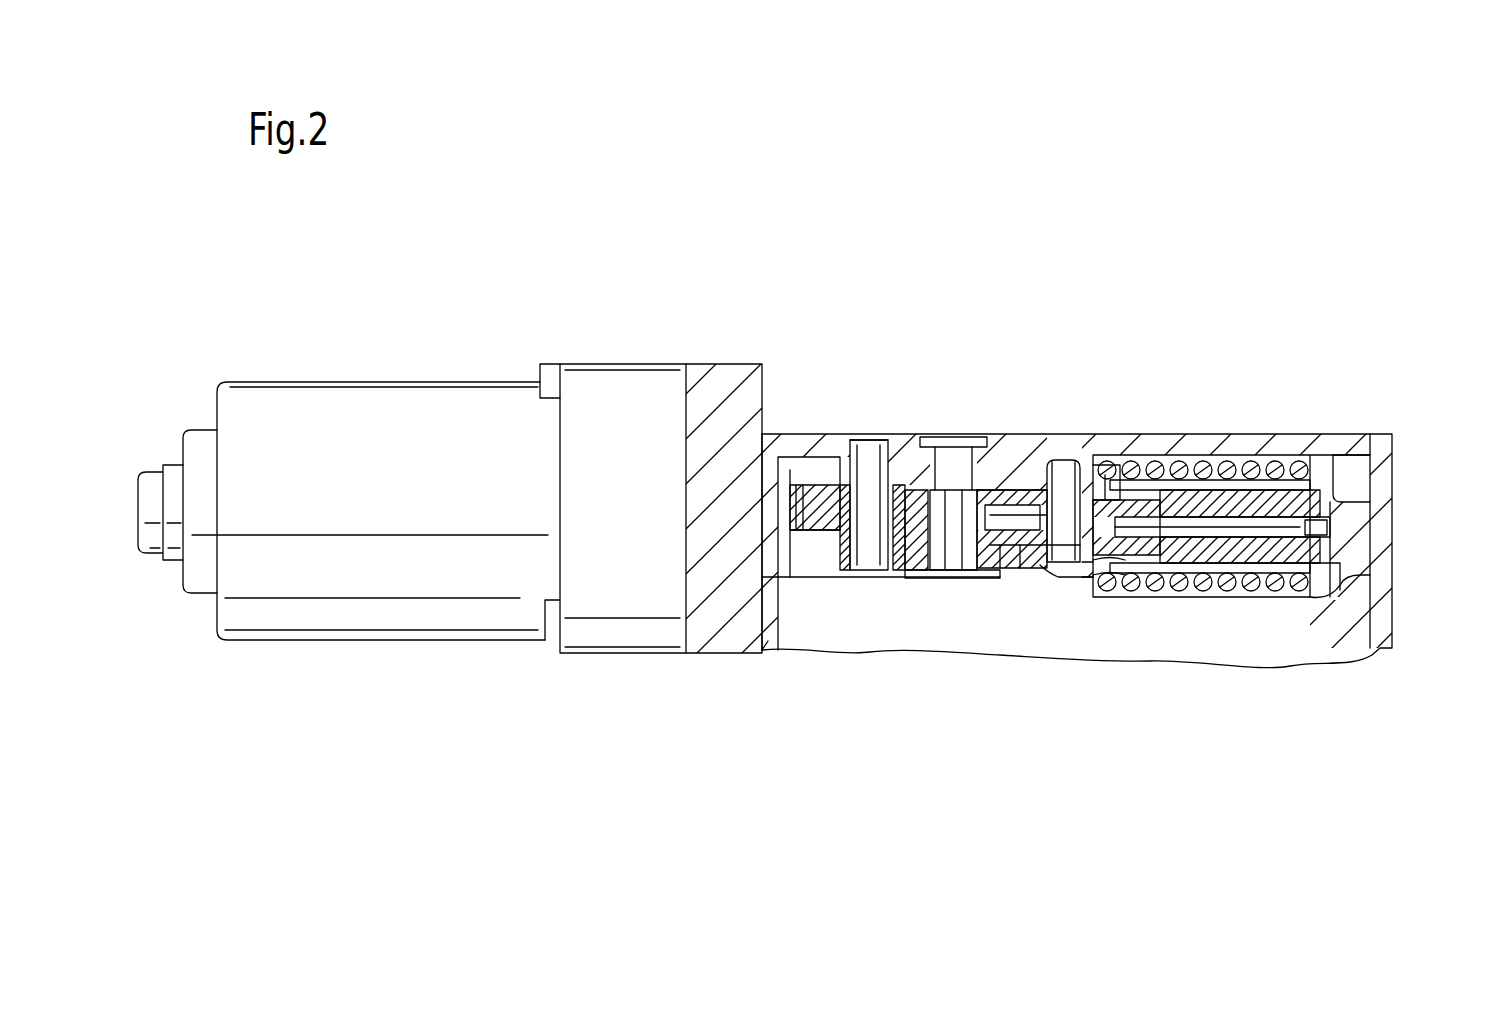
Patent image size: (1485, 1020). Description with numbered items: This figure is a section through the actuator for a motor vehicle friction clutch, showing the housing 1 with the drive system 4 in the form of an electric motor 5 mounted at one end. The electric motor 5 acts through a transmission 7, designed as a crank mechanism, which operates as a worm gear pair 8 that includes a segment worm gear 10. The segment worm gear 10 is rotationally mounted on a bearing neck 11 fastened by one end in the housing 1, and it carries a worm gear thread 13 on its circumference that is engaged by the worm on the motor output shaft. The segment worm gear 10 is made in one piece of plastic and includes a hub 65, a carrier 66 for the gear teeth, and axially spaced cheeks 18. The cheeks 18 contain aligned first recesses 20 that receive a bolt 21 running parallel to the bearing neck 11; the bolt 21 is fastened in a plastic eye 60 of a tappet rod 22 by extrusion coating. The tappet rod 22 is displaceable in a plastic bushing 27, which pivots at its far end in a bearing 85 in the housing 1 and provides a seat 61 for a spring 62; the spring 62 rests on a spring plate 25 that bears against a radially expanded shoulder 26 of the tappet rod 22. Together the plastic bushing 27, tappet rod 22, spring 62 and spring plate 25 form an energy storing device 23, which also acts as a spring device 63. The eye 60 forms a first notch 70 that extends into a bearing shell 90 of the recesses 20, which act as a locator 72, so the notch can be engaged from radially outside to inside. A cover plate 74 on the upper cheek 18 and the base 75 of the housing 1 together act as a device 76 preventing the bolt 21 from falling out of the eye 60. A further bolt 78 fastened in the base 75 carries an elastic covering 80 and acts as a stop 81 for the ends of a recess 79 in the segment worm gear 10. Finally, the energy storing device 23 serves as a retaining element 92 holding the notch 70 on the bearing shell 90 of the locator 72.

The housing 1 is at (895, 415).
The drive system 4 is at (401, 645).
The electric motor 5 is at (235, 618).
The transmission 7 is at (1025, 450).
The worm gear pair 8 is at (1000, 450).
The segment worm gear 10 is at (822, 540).
The bearing neck 11 is at (955, 575).
The worm gear thread 13 is at (790, 580).
The cheeks 18 is at (1085, 455).
The first recesses 20 is at (1050, 575).
The bolt 21 is at (1075, 578).
The tappet rod 22 is at (1160, 455).
The energy storing device 23 is at (1243, 455).
The spring plate 25 is at (1205, 578).
The radially expanded shoulder 26 is at (1160, 580).
The plastic bushing 27 is at (1303, 455).
The eye 60 is at (1118, 580).
The seat 61 is at (1320, 590).
The spring 62 is at (1288, 590).
The spring device 63 is at (1118, 455).
The hub 65 is at (907, 572).
The carrier 66 is at (797, 540).
The first notch 70 is at (1030, 580).
The locator 72 is at (1058, 575).
The cover plate 74 is at (1100, 578).
The base 75 is at (1075, 455).
The device 76 is at (1068, 450).
The bolt 78 is at (882, 445).
The recess 79 is at (815, 442).
The elastic covering 80 is at (845, 560).
The stop 81 is at (856, 445).
The bearing 85 is at (1372, 487).
The bearing shell 90 is at (1005, 580).
The retaining element 92 is at (1348, 574).